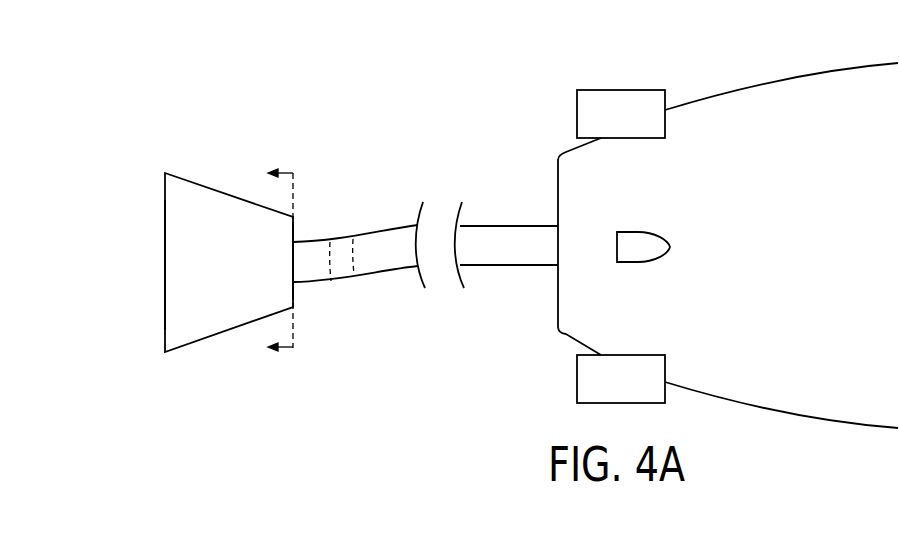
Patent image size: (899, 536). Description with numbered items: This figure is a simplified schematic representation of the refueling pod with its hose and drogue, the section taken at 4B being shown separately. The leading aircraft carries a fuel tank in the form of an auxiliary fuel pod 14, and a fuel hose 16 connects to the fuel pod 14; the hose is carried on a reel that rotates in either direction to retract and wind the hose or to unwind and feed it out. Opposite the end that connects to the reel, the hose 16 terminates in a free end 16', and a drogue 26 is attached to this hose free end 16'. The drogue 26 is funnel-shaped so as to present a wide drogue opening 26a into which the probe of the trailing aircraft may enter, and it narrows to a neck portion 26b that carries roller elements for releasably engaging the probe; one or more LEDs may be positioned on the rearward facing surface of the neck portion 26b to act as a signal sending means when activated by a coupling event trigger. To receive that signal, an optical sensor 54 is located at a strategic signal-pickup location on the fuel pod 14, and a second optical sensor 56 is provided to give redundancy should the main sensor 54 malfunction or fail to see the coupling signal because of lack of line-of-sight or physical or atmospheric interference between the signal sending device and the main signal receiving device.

The auxiliary fuel pod 14 is at (809, 92).
The fuel hose 16 is at (506, 263).
The hose free end 16' is at (359, 269).
The drogue 26 is at (193, 197).
The drogue opening 26a is at (152, 264).
The narrowed neck portion 26b is at (296, 223).
The optical sensor 54 is at (586, 112).
The optical sensor 56 is at (586, 378).
The section line 4B is at (265, 263).